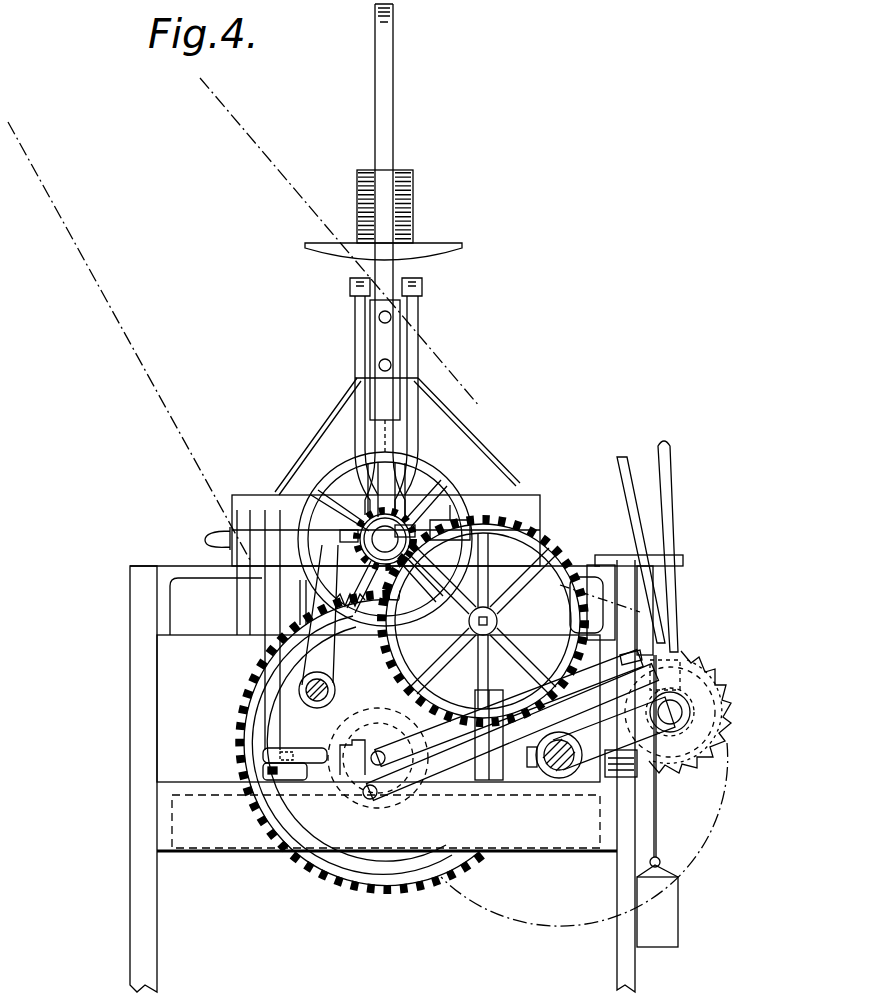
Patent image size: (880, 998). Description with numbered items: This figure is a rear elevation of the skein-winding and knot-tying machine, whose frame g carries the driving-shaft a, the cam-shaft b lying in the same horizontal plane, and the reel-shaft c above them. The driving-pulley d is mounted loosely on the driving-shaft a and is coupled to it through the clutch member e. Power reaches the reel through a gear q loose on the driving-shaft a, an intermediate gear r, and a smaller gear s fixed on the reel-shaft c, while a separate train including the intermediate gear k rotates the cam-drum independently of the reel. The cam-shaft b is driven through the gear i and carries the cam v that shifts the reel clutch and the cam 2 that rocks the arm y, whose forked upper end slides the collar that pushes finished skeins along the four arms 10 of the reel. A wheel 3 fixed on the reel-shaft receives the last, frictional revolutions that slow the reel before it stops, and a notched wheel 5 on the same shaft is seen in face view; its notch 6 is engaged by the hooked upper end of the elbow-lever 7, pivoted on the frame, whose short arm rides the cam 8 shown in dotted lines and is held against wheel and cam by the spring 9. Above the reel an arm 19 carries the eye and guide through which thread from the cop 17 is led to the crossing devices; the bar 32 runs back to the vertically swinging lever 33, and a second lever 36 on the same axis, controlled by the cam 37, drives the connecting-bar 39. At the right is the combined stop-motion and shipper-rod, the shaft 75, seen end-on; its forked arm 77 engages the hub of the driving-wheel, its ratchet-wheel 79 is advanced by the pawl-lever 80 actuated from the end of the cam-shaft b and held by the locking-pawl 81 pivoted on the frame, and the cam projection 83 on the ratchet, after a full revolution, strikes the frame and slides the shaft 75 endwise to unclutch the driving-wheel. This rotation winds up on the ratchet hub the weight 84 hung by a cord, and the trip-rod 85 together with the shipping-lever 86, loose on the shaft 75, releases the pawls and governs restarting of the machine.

The arm 19 is at (375, 58).
The cop of thread 17 is at (420, 197).
The connecting-bar 39 is at (355, 280).
The bar 32 is at (420, 280).
The second lever 36 is at (355, 307).
The vertically-swinging lever 33 is at (418, 318).
The arms 10 is at (418, 372).
The wheel 3 is at (348, 463).
The reel-shaft c is at (382, 530).
The notched wheel 5 is at (352, 522).
The notch 6 is at (350, 535).
The gear s is at (470, 530).
The intermediate gear r is at (672, 655).
The elbow-lever 7 is at (320, 633).
The arm y is at (354, 591).
The spring 9 is at (333, 607).
The cam 2 is at (323, 732).
The cam 37 is at (303, 710).
The gear i is at (253, 727).
The cam v is at (262, 768).
The cam-shaft b is at (368, 756).
The cam 8 is at (367, 773).
The pawl-lever 80 is at (427, 750).
The locking-pawl 81 is at (400, 777).
The clutch member e is at (533, 767).
The driving-shaft a is at (550, 767).
The forked arm 77 is at (621, 731).
The ratchet-wheel 79 is at (705, 712).
The shaft 75 is at (700, 685).
The cam projection 83 is at (702, 760).
The driving-pulley d is at (718, 826).
The gear q is at (617, 777).
The trip-rod 85 is at (655, 625).
The shipping-lever 86 is at (672, 500).
The intermediate gear k is at (603, 653).
The weight 84 is at (678, 900).
The frame g is at (130, 722).